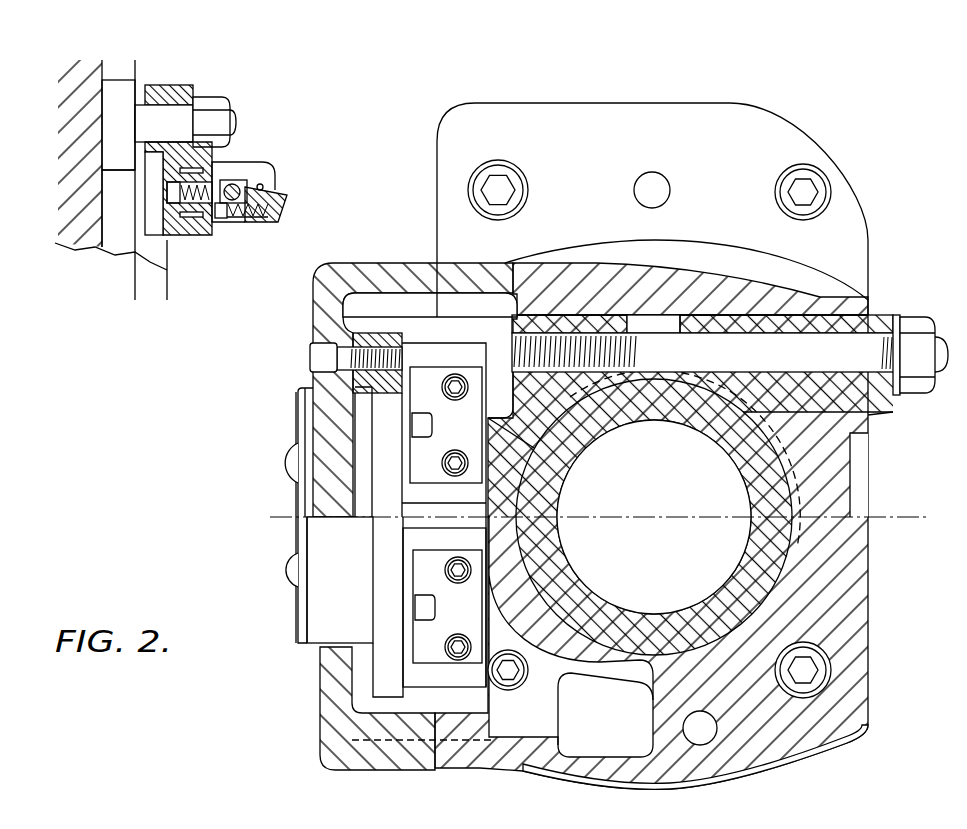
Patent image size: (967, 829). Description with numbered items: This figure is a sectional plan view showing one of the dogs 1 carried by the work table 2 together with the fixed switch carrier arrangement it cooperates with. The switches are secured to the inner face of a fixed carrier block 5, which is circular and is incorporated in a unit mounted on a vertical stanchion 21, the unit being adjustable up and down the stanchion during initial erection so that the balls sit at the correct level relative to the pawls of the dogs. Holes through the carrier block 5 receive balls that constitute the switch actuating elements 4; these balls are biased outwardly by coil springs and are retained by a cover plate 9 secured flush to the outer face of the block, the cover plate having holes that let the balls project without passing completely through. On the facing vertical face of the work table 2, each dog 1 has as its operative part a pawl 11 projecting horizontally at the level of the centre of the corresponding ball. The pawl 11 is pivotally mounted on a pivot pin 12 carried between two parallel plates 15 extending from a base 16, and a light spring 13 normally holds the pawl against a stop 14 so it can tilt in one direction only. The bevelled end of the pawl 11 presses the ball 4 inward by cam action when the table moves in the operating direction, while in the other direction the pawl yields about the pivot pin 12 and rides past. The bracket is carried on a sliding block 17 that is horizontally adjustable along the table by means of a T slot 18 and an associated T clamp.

The dog 1 is at (314, 170).
The work table 2 is at (32, 105).
The actuating element 4 is at (290, 453).
The carrier block 5 is at (300, 388).
The cover plate 9 is at (295, 418).
The pawl 11 is at (287, 196).
The pivot pin 12 is at (235, 184).
The light spring 13 is at (252, 219).
The stop 14 is at (263, 185).
The parallel plates 15 is at (258, 168).
The base 16 is at (206, 222).
The sliding block 17 is at (186, 226).
The T slot 18 is at (143, 243).
The vertical stanchion 21 is at (783, 545).